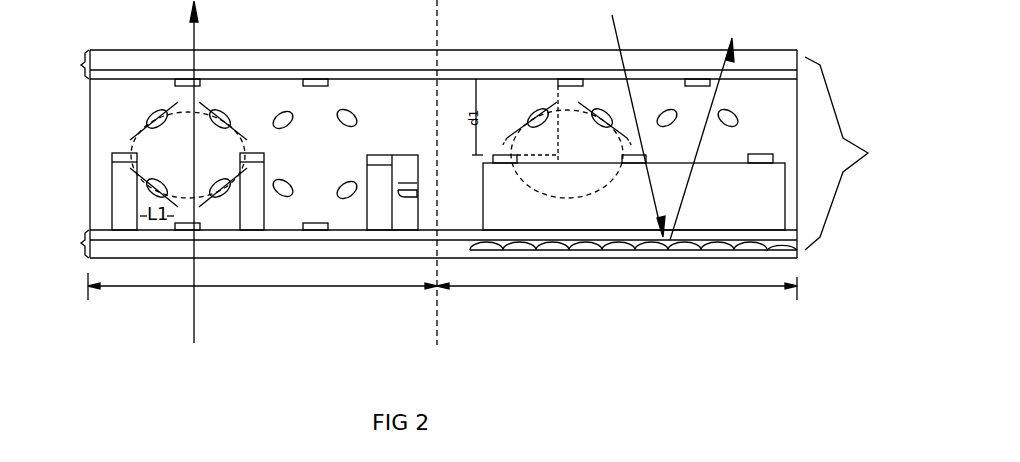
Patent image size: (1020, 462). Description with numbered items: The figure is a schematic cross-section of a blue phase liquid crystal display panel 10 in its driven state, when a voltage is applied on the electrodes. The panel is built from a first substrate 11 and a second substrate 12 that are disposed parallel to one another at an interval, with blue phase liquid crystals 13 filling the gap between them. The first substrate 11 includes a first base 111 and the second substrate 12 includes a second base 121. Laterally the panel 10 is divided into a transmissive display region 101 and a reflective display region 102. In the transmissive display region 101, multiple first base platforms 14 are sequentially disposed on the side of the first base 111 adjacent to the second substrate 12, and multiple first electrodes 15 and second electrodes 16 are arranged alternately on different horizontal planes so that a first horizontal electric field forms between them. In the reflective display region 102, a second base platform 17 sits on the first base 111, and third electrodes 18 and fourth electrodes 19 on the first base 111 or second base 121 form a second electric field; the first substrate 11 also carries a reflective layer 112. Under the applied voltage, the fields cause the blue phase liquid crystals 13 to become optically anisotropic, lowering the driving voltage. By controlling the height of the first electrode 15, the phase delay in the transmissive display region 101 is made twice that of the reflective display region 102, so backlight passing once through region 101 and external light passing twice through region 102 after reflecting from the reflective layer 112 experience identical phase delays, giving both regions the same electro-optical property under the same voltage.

The blue phase liquid crystal display panel 10 is at (868, 153).
The first substrate 11 is at (81, 243).
The first base 111 is at (98, 232).
The reflective layer 112 is at (488, 245).
The second substrate 12 is at (81, 65).
The second base 121 is at (103, 75).
The blue phase liquid crystals 13 is at (145, 122).
The first base platforms 14 is at (248, 213).
The first electrodes 15 is at (250, 162).
The second electrodes 16 is at (318, 229).
The second base platform 17 is at (518, 202).
The third electrodes 18 is at (653, 243).
The fourth electrodes 19 is at (696, 86).
The transmissive display region 101 is at (262, 279).
The reflective display region 102 is at (617, 280).